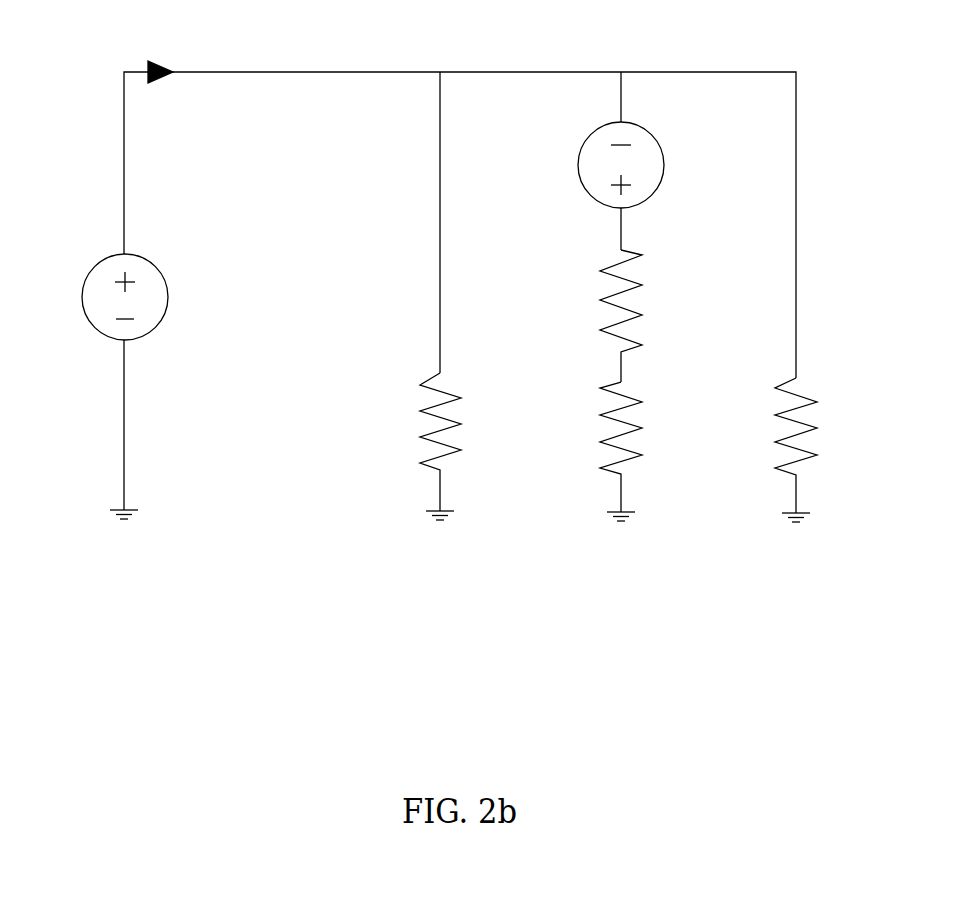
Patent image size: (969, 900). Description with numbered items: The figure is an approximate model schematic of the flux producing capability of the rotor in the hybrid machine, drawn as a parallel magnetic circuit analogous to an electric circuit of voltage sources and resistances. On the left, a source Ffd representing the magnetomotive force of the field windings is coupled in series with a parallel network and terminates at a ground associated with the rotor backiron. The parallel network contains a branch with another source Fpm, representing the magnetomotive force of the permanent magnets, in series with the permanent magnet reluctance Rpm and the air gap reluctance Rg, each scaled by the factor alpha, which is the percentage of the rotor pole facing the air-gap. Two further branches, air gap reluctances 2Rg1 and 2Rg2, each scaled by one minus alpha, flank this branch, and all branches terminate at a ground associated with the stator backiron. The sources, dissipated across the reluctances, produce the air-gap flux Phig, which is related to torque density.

The air-gap flux Phig is at (460, 189).
The field winding magnetomotive force source Ffd is at (99, 386).
The permanent magnet magnetomotive force source Fpm is at (659, 161).
The permanent magnet reluctance Rpm is at (740, 313).
The air gap reluctance Rg is at (725, 452).
The air gap reluctance branch 2Rg1 is at (563, 440).
The air gap reluctance branch 2Rg2 is at (918, 452).